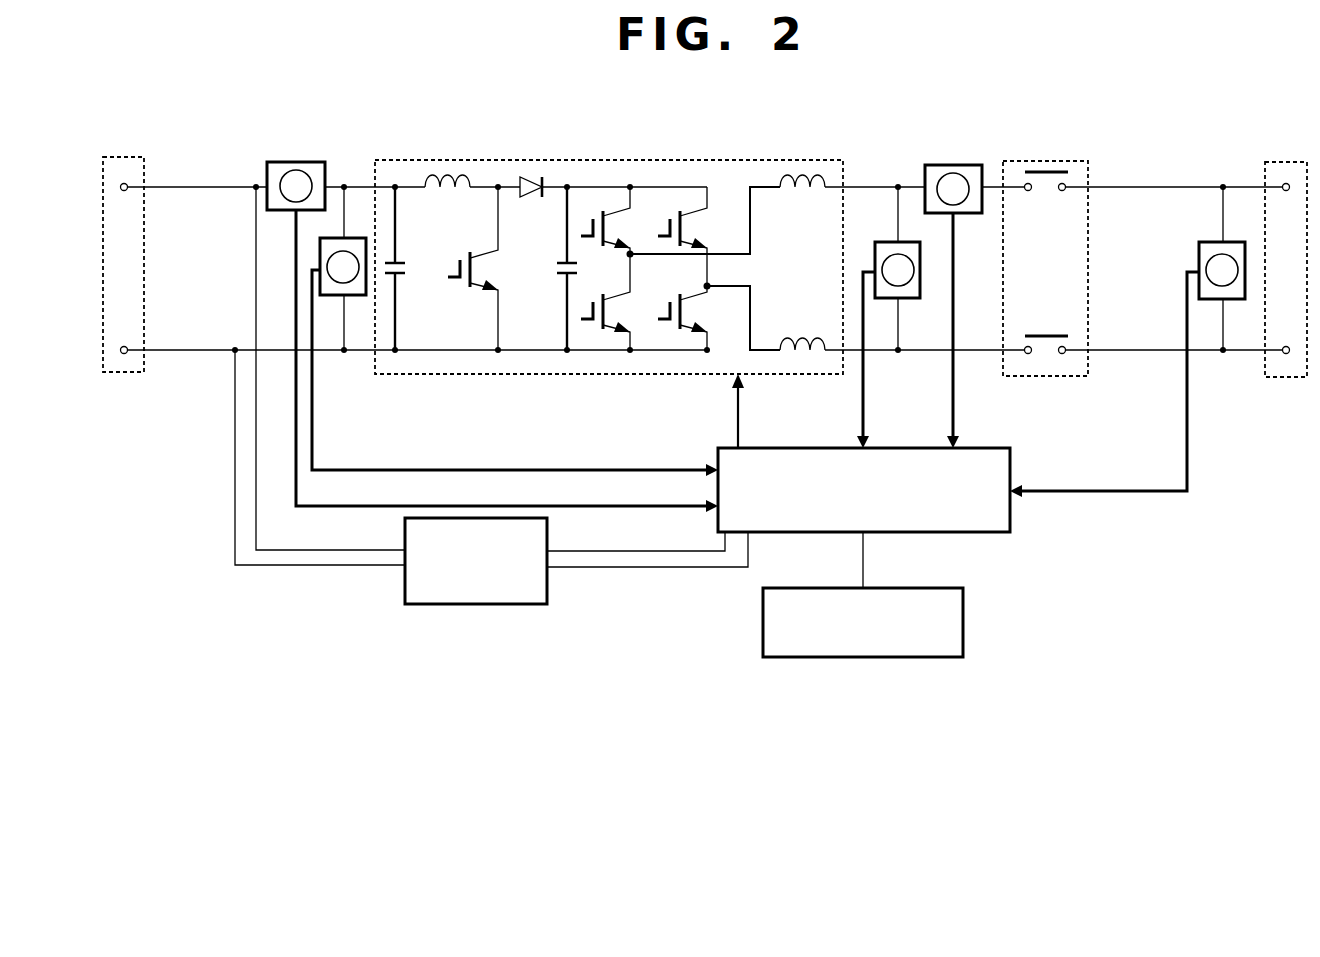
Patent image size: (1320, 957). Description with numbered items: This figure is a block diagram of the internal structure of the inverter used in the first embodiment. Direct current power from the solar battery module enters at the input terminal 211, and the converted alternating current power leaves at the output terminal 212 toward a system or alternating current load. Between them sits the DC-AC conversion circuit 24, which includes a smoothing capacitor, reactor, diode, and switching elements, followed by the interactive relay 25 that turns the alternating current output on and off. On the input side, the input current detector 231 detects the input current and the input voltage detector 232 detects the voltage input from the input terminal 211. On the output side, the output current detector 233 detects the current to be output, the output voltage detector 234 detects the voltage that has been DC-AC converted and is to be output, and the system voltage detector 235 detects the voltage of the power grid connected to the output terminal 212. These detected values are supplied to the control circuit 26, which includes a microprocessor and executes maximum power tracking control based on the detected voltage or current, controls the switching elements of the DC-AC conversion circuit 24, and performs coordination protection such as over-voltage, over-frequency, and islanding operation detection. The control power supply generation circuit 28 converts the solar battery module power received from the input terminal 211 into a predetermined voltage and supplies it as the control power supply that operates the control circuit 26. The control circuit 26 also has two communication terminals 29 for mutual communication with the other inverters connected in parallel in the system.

The input terminal 211 is at (130, 157).
The output terminal 212 is at (1290, 162).
The input current detector 231 is at (296, 162).
The input voltage detector 232 is at (352, 238).
The output current detector 233 is at (953, 165).
The output voltage detector 234 is at (882, 242).
The system voltage detector 235 is at (1206, 242).
The DC-AC conversion circuit 24 is at (802, 160).
The interactive relay 25 is at (1045, 161).
The control circuit 26 is at (986, 448).
The control power supply generation circuit 28 is at (549, 589).
The communication terminals 29 is at (965, 601).